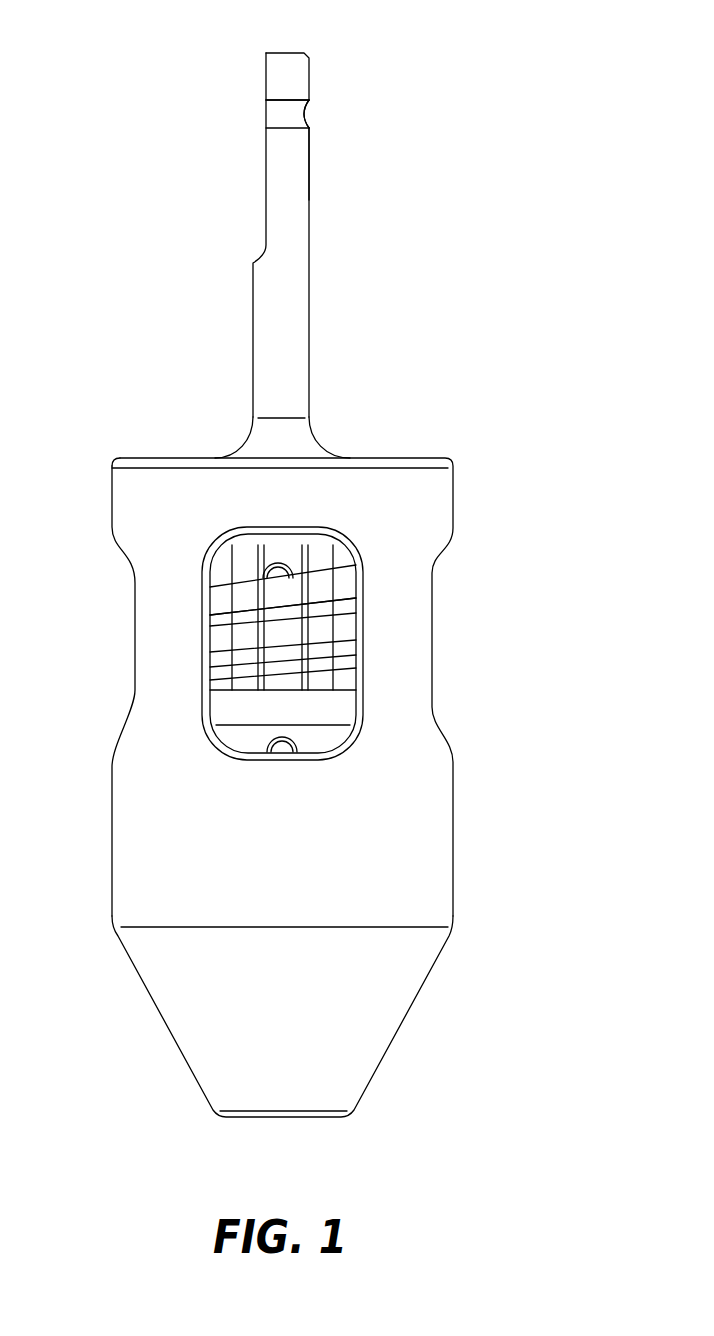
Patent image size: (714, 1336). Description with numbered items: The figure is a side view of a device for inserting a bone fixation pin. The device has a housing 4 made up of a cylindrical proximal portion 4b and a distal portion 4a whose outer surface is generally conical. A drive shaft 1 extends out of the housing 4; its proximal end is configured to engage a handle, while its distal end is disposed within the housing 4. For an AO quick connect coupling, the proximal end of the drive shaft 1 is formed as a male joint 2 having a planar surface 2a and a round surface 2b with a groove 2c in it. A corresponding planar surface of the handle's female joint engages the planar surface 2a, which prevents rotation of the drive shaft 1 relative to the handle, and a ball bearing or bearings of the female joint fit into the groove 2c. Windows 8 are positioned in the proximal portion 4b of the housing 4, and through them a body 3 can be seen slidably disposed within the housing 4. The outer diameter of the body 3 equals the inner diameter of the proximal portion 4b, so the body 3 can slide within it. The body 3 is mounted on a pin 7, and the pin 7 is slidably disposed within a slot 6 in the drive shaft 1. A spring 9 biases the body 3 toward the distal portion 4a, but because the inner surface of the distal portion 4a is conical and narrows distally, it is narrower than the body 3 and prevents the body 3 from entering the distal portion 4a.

The drive shaft 1 is at (340, 582).
The male joint 2 is at (282, 45).
The planar surface 2a is at (266, 113).
The round surface 2b is at (310, 143).
The groove 2c is at (306, 114).
The body 3 is at (318, 705).
The housing 4 is at (358, 787).
The distal portion 4a is at (306, 1016).
The cylindrical proximal portion 4b is at (457, 837).
The slot 6 is at (320, 612).
The pin 7 is at (278, 746).
The windows 8 is at (214, 596).
The spring 9 is at (320, 615).